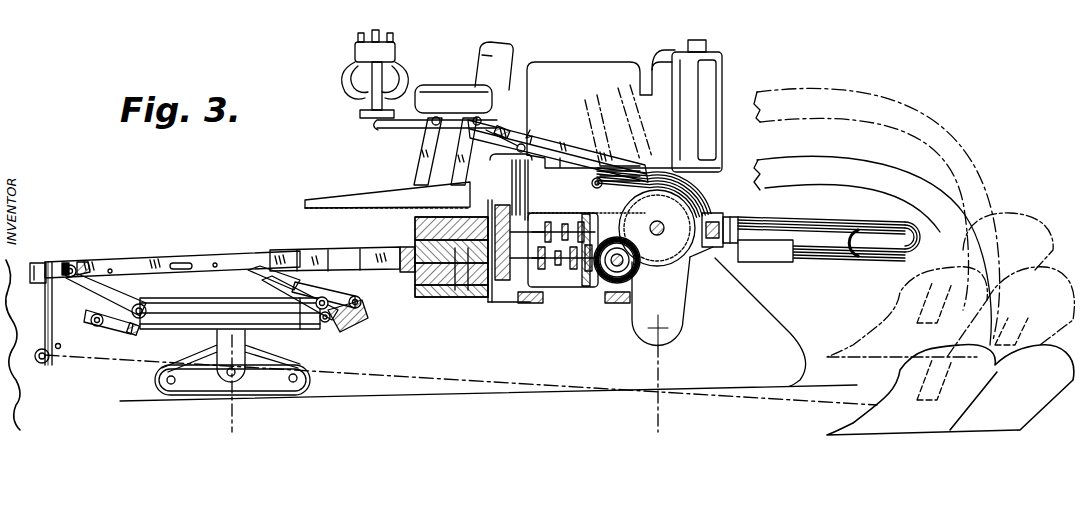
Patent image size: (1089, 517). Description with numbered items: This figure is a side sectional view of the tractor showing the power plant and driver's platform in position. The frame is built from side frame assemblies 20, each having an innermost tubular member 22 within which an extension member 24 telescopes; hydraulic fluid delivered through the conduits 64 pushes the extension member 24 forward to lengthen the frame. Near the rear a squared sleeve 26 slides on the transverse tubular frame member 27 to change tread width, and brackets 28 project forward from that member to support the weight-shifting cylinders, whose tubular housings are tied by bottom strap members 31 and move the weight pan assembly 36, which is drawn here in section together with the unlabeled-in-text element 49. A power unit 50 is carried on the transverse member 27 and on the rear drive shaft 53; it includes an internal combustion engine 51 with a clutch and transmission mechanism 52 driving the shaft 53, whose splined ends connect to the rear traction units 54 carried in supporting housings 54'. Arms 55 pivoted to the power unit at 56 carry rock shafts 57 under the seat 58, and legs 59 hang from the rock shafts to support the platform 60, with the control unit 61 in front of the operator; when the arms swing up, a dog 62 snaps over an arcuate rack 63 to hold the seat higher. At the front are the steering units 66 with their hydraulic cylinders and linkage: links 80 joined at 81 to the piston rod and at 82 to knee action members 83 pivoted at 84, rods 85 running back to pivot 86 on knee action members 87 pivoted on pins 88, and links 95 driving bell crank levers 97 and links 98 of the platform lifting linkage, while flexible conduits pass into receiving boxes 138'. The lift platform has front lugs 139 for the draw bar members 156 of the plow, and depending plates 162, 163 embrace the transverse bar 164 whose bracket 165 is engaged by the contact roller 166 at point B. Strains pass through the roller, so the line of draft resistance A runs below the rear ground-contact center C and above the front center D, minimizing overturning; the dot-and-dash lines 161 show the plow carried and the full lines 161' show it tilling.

The side frame assembly 20 is at (402, 274).
The tubular member 22 is at (388, 250).
The extension member 24 is at (212, 260).
The squared sleeve 26 is at (738, 222).
The transverse tubular frame member 27 is at (714, 213).
The bracket 28 is at (712, 250).
The bottom strap member 31 is at (526, 304).
The weight pan assembly 36 is at (428, 298).
The packing 49 is at (464, 292).
The power unit 50 is at (591, 53).
The internal combustion engine 51 is at (570, 75).
The clutch and transmission mechanism 52 is at (586, 288).
The rear drive shaft 53 is at (666, 216).
The rear traction unit 54 is at (760, 322).
The supporting housing 54' is at (676, 301).
The arm 55 is at (578, 144).
The pivot 56 is at (634, 152).
The rock shaft 57 is at (436, 120).
The seat 58 is at (456, 84).
The leg 59 is at (420, 152).
The platform 60 is at (334, 198).
The control unit 61 is at (352, 54).
The dog 62 is at (522, 130).
The arcuate rack 63 is at (536, 138).
The conduit 64 is at (868, 240).
The ground engaging steering unit 66 is at (276, 392).
The link 80 is at (112, 334).
The pivot 81 is at (95, 328).
The pivot 82 is at (131, 336).
The knee action member 83 is at (110, 300).
The pivot 84 is at (144, 304).
The rod 85 is at (172, 330).
The pivot 86 is at (324, 324).
The knee action member 87 is at (284, 286).
The pin 88 is at (342, 251).
The link 95 is at (352, 320).
The bell crank lever 97 is at (346, 296).
The link 98 is at (330, 250).
The receiving box 138' is at (296, 251).
The projecting lug 139 is at (38, 263).
The draw bar member 156 is at (794, 154).
The elevated plow position 161 is at (877, 203).
The tilling position 161' is at (983, 164).
The depending plate 162 is at (38, 306).
The depending plate 163 is at (82, 266).
The transverse bar 164 is at (60, 266).
The depending bracket portion 165 is at (54, 348).
The transverse contact roller 166 is at (35, 357).
The line of draft resistance A is at (414, 390).
The point of roller contact B is at (62, 348).
The center of ground contact of rear traction members C is at (658, 390).
The center of ground contact of front steering members D is at (232, 394).